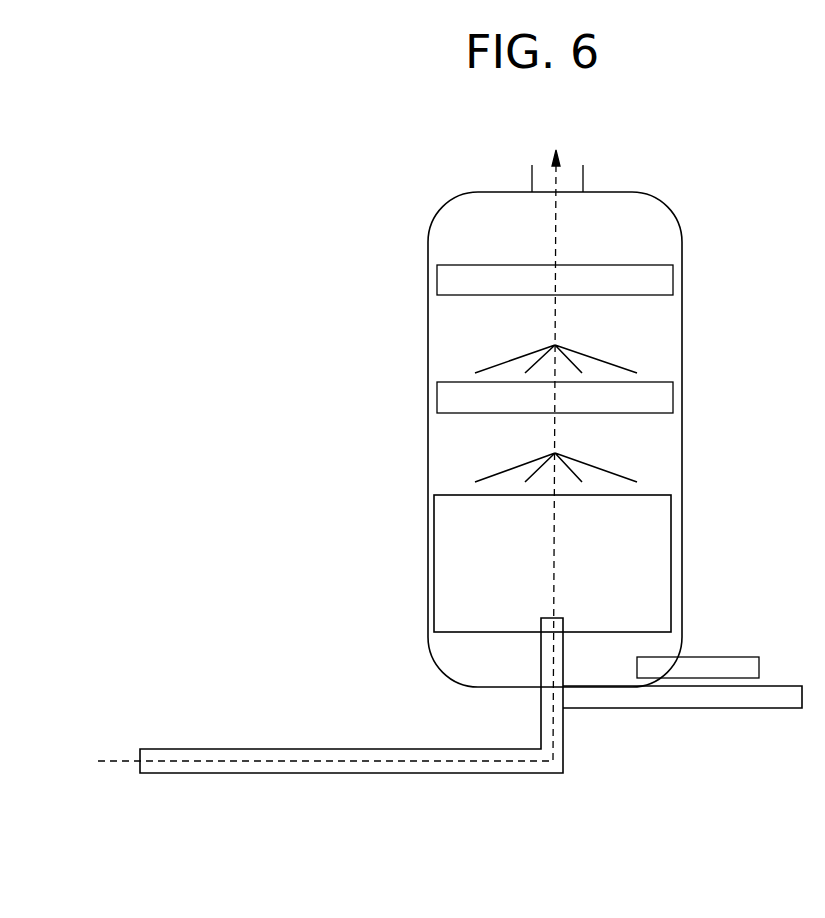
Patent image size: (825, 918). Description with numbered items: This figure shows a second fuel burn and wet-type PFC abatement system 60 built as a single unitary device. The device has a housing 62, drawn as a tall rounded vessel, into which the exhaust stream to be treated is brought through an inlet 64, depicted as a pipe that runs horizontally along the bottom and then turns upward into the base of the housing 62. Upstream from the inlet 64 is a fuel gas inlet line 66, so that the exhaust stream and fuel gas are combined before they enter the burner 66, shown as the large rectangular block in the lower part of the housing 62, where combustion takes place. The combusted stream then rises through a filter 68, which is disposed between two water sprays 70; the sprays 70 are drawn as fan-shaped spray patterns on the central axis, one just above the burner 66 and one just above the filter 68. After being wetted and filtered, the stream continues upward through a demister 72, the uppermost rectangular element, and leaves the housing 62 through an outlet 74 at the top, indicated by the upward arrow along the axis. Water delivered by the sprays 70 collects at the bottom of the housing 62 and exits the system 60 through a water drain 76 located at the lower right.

The fuel burn and wet-type PFC abatement system 60 is at (722, 232).
The housing 62 is at (682, 512).
The inlet 64 is at (541, 707).
The fuel gas inlet line / burner 66 is at (437, 568).
The filter 68 is at (438, 393).
The water sprays 70 is at (555, 345).
The demister 72 is at (438, 280).
The outlet 74 is at (585, 183).
The water drain 76 is at (731, 657).